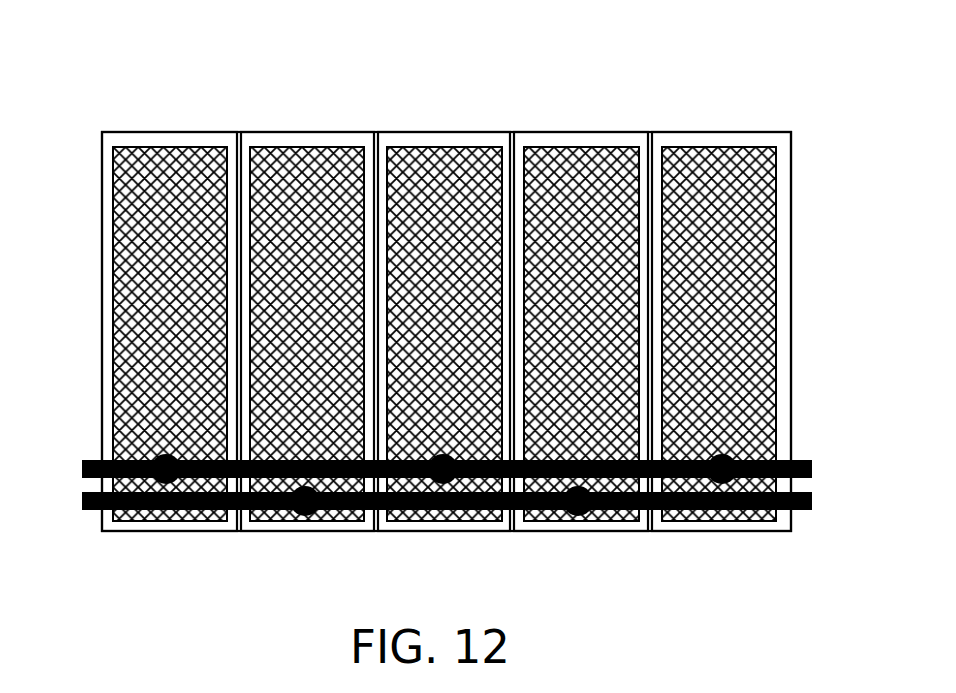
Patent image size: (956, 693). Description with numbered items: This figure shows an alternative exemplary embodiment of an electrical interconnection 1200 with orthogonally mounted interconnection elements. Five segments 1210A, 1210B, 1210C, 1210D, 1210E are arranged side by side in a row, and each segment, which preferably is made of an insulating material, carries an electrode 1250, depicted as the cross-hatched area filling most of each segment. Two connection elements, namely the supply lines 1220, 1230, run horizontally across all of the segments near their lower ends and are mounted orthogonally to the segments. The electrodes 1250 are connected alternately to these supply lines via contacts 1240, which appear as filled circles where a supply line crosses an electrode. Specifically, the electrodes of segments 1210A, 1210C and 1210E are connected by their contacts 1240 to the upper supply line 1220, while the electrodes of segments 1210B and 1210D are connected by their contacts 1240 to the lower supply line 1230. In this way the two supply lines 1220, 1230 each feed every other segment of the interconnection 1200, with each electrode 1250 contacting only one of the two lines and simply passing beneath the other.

The electrical interconnection 1200 is at (120, 96).
The segment 1210A is at (187, 132).
The segment 1210B is at (338, 132).
The segment 1210C is at (480, 132).
The segment 1210D is at (610, 132).
The segment 1210E is at (747, 132).
The connection element (supply line) 1220 is at (82, 469).
The connection element (supply line) 1230 is at (82, 502).
The contact 1240 is at (160, 455).
The electrode 1250 is at (125, 210).